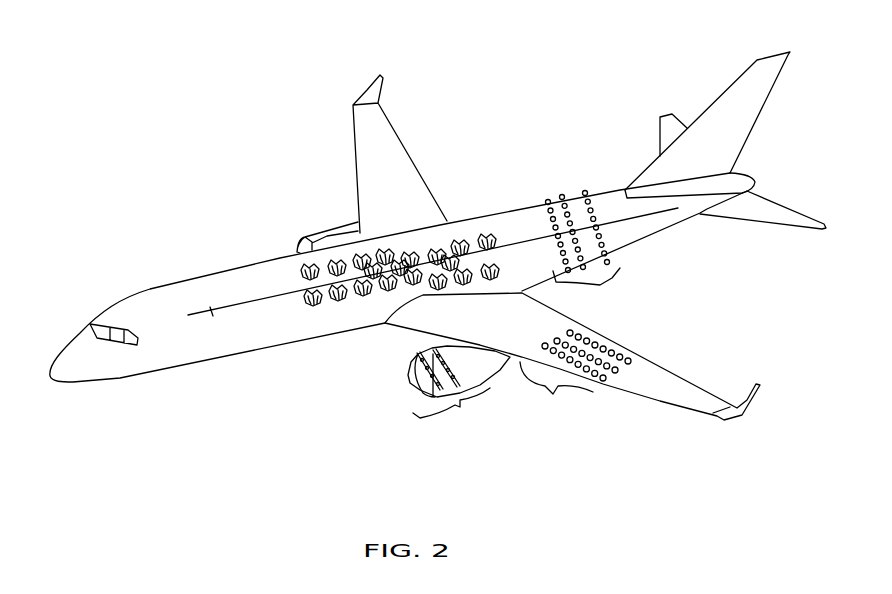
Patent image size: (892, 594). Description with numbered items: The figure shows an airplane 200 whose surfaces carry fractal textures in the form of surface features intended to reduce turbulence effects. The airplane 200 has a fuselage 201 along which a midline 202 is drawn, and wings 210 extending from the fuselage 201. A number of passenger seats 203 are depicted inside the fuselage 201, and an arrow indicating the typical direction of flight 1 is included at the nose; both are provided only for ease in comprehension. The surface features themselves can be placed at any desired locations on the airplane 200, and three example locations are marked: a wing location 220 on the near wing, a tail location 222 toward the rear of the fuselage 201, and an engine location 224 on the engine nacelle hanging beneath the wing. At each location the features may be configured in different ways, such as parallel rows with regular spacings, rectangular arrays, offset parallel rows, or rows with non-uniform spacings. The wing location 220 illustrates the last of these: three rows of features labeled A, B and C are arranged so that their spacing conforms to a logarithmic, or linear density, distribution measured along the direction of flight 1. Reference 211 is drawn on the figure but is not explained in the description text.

The direction of flight 1 is at (122, 420).
The airplane 200 is at (193, 94).
The fuselage 201 is at (158, 288).
The midline 202 is at (212, 312).
The passenger seats 203 is at (363, 310).
The wings 210 is at (428, 184).
The wing root / fuselage surface 211 is at (468, 201).
The wing location 220 is at (553, 394).
The tail location 222 is at (605, 285).
The engine location 224 is at (458, 415).
The row A is at (605, 383).
The row B is at (626, 372).
The row C is at (636, 386).